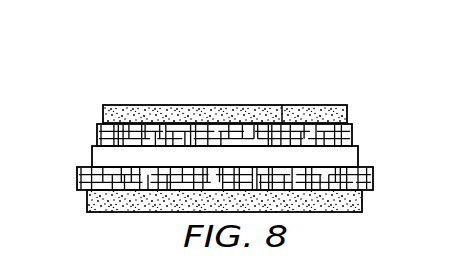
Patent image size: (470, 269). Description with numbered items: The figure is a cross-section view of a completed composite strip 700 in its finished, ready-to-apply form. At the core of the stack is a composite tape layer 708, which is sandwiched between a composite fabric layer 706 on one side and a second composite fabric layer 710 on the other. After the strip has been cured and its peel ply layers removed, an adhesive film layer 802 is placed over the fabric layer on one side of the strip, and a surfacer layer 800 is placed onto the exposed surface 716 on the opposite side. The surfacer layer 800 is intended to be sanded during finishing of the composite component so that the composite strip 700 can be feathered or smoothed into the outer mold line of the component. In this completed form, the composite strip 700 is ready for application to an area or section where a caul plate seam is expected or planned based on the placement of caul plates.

The composite strip 700 is at (178, 82).
The composite fabric layer 706 is at (373, 175).
The composite tape layer 708 is at (90, 155).
The composite fabric layer 710 is at (352, 135).
The surface 716 is at (283, 105).
The surfacer layer 800 is at (88, 197).
The adhesive film layer 802 is at (102, 115).